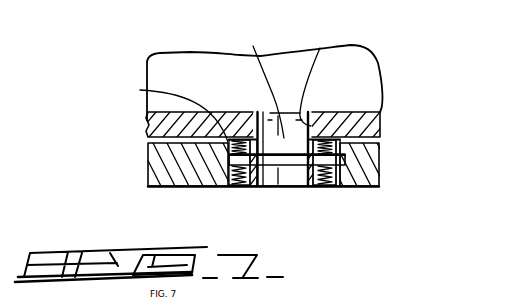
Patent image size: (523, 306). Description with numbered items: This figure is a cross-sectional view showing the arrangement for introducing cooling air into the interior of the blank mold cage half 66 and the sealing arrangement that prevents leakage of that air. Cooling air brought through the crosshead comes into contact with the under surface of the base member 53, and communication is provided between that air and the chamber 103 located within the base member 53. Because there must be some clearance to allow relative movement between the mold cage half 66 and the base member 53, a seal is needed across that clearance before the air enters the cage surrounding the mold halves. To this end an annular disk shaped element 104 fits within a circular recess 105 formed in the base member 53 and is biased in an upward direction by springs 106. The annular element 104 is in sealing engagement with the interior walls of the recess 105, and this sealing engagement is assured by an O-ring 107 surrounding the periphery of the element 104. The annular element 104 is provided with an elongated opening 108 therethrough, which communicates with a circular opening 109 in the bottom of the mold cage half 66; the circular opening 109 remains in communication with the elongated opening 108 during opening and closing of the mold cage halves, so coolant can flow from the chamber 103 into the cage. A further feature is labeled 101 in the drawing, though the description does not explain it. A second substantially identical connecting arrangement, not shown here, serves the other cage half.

The retainer sleeve 101 is at (333, 188).
The chamber 103 is at (293, 174).
The annular disk shaped element 104 is at (147, 88).
The circular recess 105 is at (212, 189).
The springs 106 is at (244, 188).
The O-ring 107 is at (347, 150).
The elongated opening 108 is at (253, 46).
The circular opening 109 is at (320, 48).
The base member 53 is at (379, 166).
The blank cage half 66 is at (381, 117).